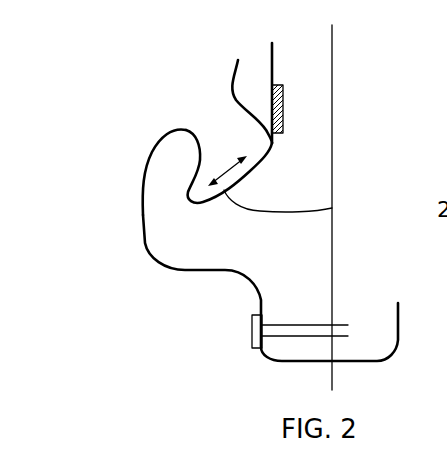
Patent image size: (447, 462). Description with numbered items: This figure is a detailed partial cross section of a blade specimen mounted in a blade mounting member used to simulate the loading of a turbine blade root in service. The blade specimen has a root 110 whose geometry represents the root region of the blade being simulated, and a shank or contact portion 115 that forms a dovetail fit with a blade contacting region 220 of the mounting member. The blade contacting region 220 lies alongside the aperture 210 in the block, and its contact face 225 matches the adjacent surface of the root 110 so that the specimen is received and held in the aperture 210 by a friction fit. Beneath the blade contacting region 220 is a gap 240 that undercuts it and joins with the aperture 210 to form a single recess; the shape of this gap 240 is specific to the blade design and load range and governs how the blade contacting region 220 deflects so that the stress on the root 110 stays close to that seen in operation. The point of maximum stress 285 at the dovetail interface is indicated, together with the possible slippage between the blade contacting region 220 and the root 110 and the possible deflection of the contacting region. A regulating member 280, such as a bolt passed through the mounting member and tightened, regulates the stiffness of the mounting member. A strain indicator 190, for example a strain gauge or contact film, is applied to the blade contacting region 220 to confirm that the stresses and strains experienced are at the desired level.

The root 110 is at (297, 152).
The shank / contact portion 115 is at (262, 160).
The strain indicator 190 is at (284, 107).
The aperture 210 is at (127, 145).
The blade contacting region 220 is at (226, 160).
The contact face 225 is at (253, 210).
The gap 240 is at (177, 178).
The regulating member 280 is at (252, 329).
The point of maximum stress 285 is at (252, 162).